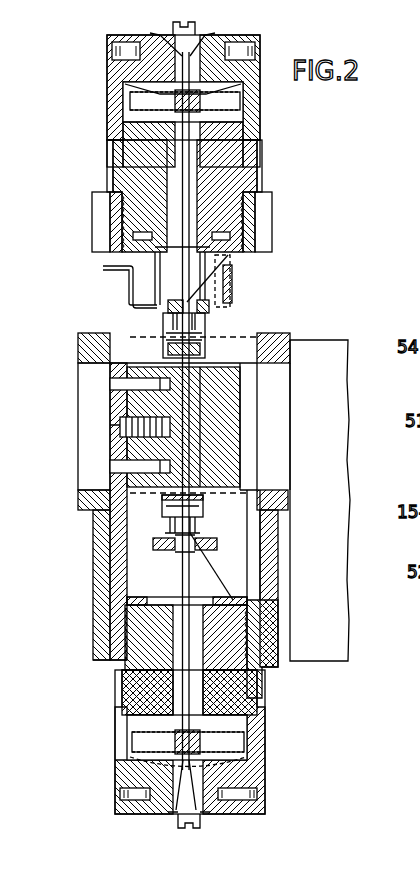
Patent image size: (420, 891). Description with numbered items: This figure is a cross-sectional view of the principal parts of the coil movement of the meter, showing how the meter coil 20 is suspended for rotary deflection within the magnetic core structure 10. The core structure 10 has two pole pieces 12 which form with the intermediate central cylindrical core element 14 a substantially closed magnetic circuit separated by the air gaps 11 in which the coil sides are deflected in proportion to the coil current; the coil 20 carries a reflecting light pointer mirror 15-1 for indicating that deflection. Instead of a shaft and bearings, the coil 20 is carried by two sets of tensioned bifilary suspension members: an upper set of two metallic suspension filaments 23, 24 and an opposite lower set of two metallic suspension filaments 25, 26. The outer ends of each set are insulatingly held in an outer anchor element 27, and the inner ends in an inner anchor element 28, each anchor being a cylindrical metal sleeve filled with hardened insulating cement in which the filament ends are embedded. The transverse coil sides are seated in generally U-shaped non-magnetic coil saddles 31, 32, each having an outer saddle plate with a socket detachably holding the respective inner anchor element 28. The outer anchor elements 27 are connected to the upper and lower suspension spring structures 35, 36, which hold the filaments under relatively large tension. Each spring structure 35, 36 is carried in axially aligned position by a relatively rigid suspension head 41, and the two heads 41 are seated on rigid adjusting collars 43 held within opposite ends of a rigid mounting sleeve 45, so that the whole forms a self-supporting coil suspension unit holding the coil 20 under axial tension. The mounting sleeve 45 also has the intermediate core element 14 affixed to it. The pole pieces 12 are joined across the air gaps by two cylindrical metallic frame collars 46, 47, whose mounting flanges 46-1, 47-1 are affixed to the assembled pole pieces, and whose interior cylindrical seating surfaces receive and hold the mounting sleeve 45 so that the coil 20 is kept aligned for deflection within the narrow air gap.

The suspension head 41 is at (250, 104).
The upper suspension spring structure 35 is at (222, 124).
The outer anchor element 27 is at (176, 122).
The adjusting collar 43 is at (256, 152).
The suspension filament 24 is at (192, 177).
The suspension filament 23 is at (112, 164).
The frame collar 46 is at (100, 228).
The light pointer mirror 15-1 is at (230, 267).
The meter coil 20 is at (205, 347).
The coil saddle 31 is at (158, 333).
The mounting flange 46-1 is at (82, 350).
The air gap 11 is at (262, 392).
The central cylindrical core element 14 is at (238, 433).
The mounting flange 47-1 is at (88, 498).
The frame collar 47 is at (108, 643).
The inner anchor element 28 is at (180, 553).
The coil saddle 32 is at (164, 540).
The suspension filament 26 is at (189, 565).
The suspension filament 25 is at (178, 593).
The mounting sleeve 45 is at (112, 590).
The pole piece 12 is at (283, 658).
The magnetic core structure 10 is at (326, 641).
The lower suspension spring structure 36 is at (234, 727).